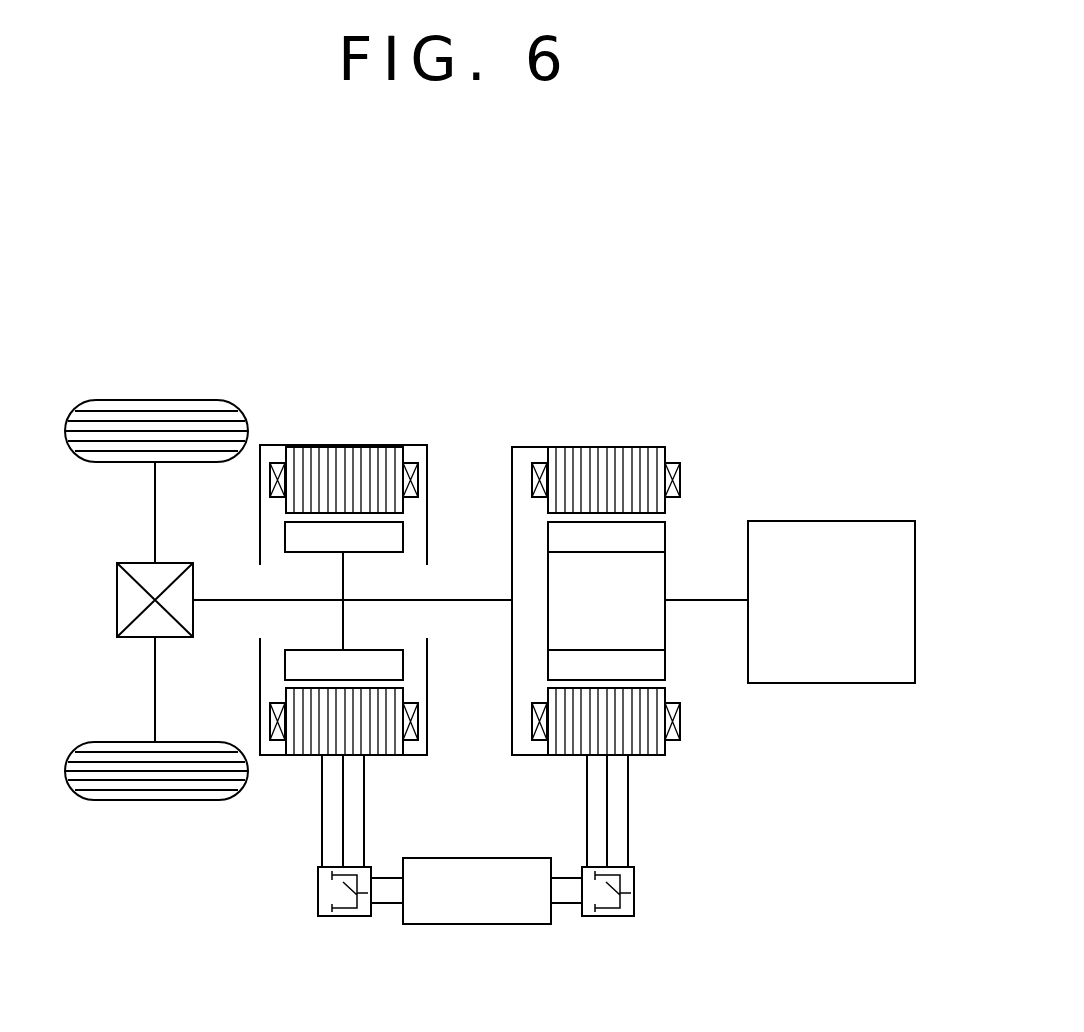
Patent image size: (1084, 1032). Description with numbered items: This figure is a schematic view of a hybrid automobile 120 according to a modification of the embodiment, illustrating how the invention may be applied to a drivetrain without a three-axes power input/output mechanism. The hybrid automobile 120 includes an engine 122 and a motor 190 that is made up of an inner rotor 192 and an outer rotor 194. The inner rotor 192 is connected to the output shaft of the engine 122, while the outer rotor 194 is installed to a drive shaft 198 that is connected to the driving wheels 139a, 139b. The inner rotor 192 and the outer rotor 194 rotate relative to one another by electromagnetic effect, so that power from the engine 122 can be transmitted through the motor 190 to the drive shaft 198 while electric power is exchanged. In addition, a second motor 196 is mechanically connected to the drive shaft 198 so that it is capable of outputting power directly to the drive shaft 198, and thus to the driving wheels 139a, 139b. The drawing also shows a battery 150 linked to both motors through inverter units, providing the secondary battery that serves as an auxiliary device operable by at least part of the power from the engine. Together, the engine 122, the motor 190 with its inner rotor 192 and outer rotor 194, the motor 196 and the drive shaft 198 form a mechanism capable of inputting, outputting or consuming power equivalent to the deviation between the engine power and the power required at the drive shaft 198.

The hybrid automobile 120 is at (437, 340).
The engine 122 is at (831, 683).
The driving wheel 139a is at (153, 400).
The driving wheel 139b is at (156, 800).
The battery 150 is at (477, 924).
The motor 190 is at (625, 536).
The inner rotor 192 is at (668, 572).
The outer rotor 194 is at (605, 447).
The motor 196 is at (343, 447).
The drive shaft 198 is at (478, 598).